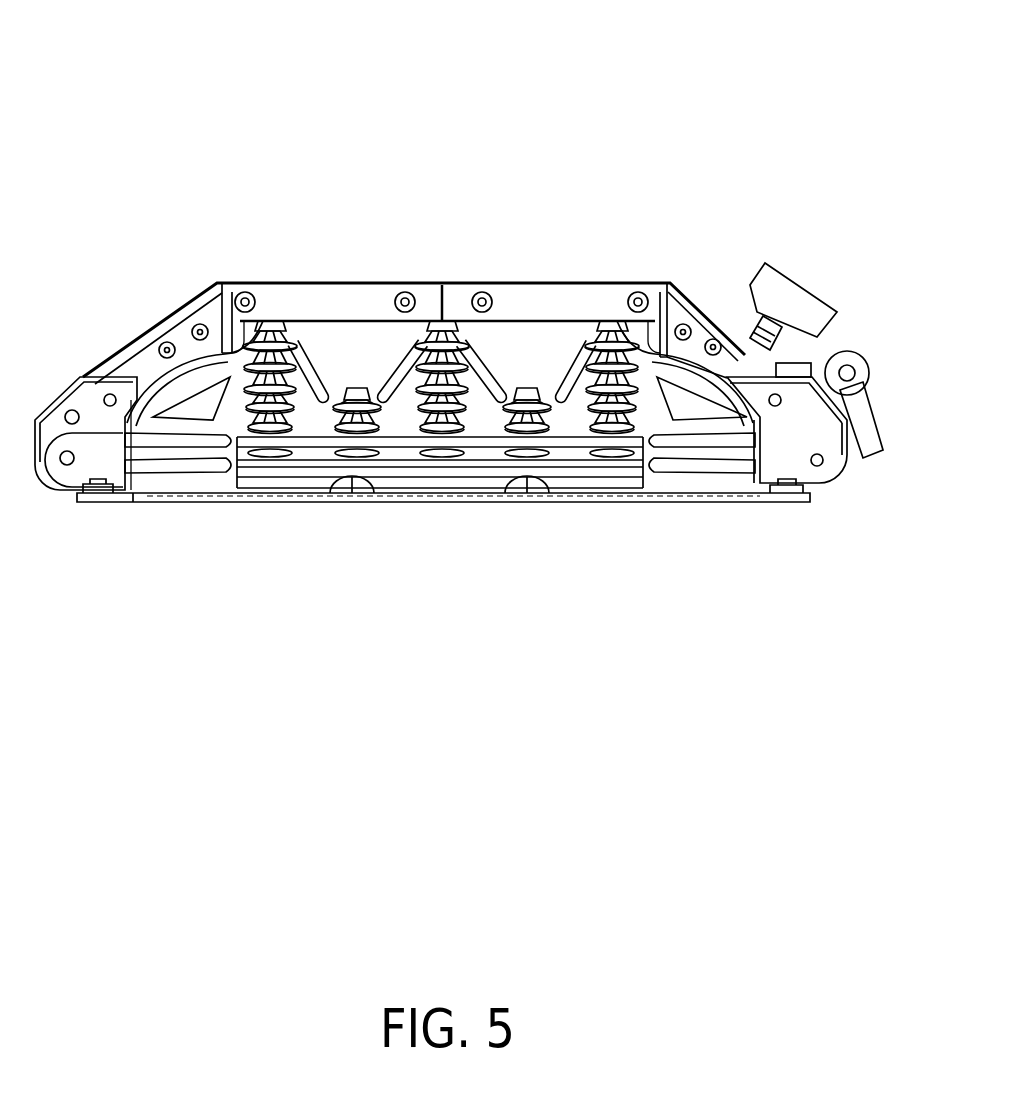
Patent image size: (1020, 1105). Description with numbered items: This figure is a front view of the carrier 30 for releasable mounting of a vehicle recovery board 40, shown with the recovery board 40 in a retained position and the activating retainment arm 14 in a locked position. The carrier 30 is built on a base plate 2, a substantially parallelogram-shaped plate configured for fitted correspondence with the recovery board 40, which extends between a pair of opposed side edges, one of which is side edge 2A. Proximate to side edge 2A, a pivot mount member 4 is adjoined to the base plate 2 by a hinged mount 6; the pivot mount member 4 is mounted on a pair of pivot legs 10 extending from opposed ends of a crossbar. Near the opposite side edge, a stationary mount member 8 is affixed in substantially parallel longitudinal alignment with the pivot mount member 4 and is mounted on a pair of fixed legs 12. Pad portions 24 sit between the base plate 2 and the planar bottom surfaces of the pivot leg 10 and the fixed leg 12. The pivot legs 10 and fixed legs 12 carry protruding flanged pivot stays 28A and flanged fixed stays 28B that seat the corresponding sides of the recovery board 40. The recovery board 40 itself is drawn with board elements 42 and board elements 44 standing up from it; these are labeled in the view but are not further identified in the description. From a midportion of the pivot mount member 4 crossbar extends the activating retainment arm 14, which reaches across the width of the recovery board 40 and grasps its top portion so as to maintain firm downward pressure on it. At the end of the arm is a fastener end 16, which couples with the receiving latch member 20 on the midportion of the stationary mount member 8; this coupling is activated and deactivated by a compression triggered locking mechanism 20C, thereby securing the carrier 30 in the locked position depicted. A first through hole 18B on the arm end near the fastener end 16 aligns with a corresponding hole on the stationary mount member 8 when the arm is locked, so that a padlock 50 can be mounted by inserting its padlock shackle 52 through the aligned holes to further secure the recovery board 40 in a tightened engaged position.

The base plate 2 is at (467, 487).
The side edge 2A is at (400, 498).
The pivot mount member 4 is at (90, 375).
The hinged mount 6 is at (75, 478).
The stationary mount member 8 is at (780, 360).
The pivot legs 10 is at (150, 440).
The fixed legs 12 is at (753, 480).
The activating retainment arm 14 is at (548, 310).
The fastener end 16 is at (739, 349).
The first through hole 18B is at (846, 366).
The receiving latch member 20 is at (791, 366).
The compression triggered locking mechanism 20C is at (805, 350).
The pad portion 24 is at (745, 497).
The flanged pivot stays 28A is at (140, 407).
The flanged fixed stays 28B is at (765, 425).
The carrier 30 is at (229, 280).
The vehicle recovery board 40 is at (316, 482).
The support brackets 42 is at (420, 318).
The insulator stacks 44 is at (330, 393).
The padlock 50 is at (874, 458).
The padlock shackle 52 is at (854, 360).